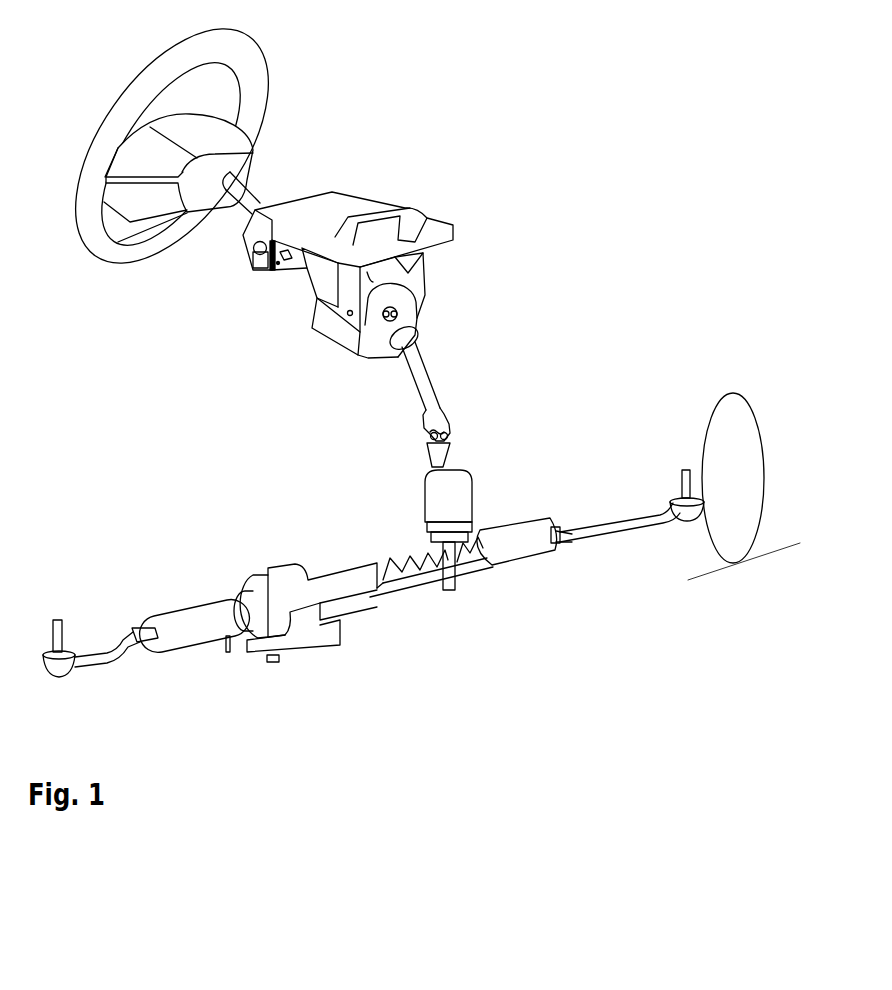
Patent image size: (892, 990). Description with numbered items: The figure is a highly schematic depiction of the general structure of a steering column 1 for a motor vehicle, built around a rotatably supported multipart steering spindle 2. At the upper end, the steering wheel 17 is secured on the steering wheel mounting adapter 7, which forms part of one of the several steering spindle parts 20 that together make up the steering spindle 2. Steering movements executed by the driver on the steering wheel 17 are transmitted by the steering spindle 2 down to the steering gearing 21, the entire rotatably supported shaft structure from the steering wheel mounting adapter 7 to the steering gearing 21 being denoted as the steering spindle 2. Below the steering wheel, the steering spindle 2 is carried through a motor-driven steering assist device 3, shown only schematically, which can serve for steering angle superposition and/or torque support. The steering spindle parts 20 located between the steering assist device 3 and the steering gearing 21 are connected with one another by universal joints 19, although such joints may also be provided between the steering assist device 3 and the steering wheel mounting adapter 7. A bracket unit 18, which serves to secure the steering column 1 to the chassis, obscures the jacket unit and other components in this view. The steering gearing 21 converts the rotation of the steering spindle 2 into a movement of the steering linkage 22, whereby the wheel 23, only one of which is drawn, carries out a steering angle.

The steering column 1 is at (463, 270).
The steering spindle 2 is at (252, 199).
The motor-driven steering assist device 3 is at (335, 322).
The steering wheel mounting adapter 7 is at (240, 172).
The steering wheel 17 is at (248, 73).
The bracket unit 18 is at (357, 210).
The universal joints 19 is at (400, 315).
The steering spindle parts 20 is at (438, 450).
The steering gearing 21 is at (457, 508).
The steering linkage 22 is at (628, 523).
The wheel 23 is at (733, 418).